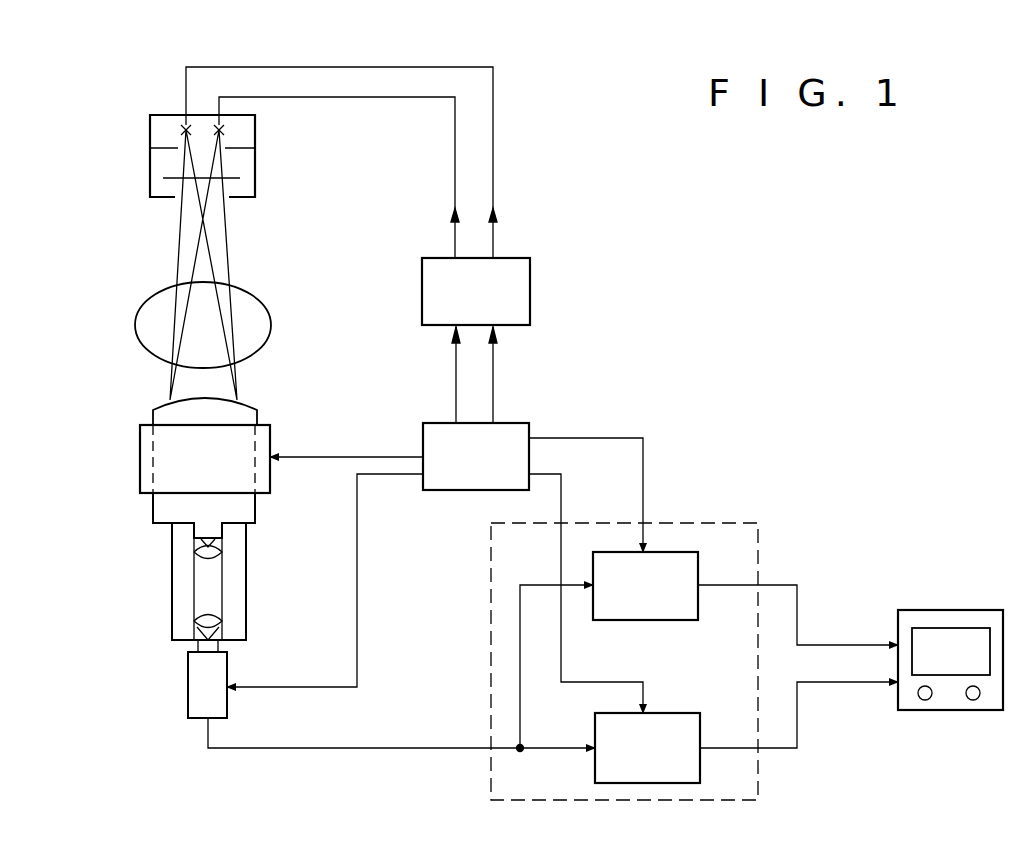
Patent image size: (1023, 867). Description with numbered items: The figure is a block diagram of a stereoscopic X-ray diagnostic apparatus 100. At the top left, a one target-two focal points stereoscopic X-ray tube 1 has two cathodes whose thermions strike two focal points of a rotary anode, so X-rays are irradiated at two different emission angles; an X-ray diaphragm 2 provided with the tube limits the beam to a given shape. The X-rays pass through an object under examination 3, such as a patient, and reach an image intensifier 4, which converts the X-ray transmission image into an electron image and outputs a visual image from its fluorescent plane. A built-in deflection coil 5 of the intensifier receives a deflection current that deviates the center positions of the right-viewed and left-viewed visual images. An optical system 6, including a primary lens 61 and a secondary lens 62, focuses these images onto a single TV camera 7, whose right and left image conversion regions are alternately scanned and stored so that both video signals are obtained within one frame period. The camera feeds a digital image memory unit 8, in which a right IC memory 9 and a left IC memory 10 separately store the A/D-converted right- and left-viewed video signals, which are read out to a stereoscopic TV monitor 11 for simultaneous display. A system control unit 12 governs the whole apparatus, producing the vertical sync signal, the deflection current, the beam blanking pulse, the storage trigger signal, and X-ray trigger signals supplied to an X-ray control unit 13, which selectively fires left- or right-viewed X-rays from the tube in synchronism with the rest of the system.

The stereoscopic X-ray diagnostic apparatus 100 is at (705, 234).
The stereoscopic X-ray tube 1 is at (150, 130).
The X-ray diaphragm 2 is at (150, 174).
The object under examination 3 is at (268, 310).
The image intensifier 4 is at (153, 414).
The deflection coil 5 is at (140, 460).
The optical system 6 is at (209, 581).
The primary lens 61 is at (223, 552).
The secondary lens 62 is at (222, 621).
The TV camera 7 is at (188, 700).
The digital image memory unit 8 is at (595, 661).
The right IC memory 9 is at (698, 612).
The left IC memory 10 is at (700, 722).
The stereoscopic TV monitor 11 is at (973, 710).
The system control unit 12 is at (520, 422).
The X-ray control unit 13 is at (530, 268).